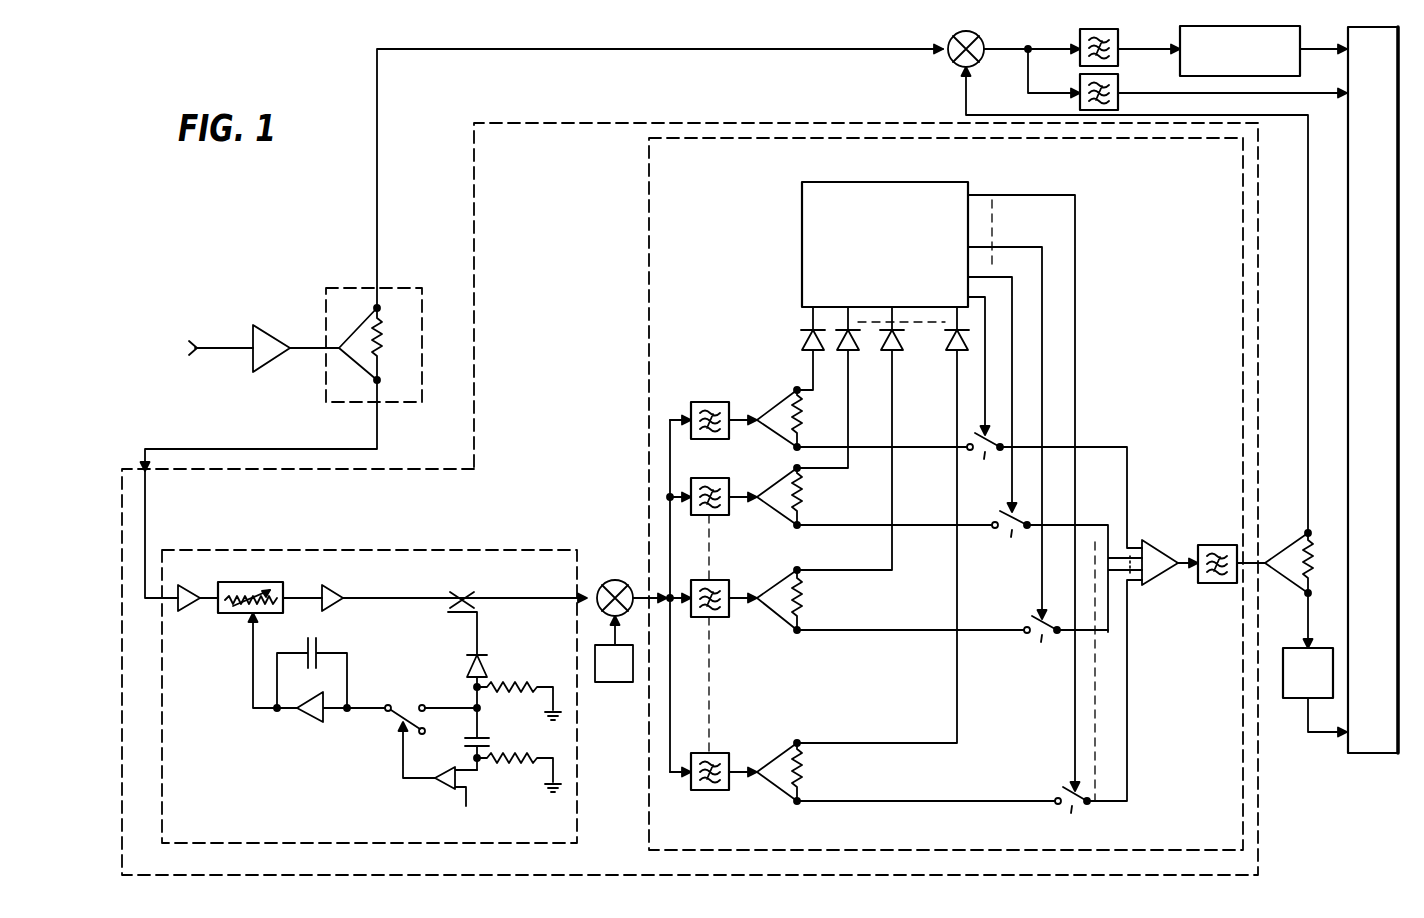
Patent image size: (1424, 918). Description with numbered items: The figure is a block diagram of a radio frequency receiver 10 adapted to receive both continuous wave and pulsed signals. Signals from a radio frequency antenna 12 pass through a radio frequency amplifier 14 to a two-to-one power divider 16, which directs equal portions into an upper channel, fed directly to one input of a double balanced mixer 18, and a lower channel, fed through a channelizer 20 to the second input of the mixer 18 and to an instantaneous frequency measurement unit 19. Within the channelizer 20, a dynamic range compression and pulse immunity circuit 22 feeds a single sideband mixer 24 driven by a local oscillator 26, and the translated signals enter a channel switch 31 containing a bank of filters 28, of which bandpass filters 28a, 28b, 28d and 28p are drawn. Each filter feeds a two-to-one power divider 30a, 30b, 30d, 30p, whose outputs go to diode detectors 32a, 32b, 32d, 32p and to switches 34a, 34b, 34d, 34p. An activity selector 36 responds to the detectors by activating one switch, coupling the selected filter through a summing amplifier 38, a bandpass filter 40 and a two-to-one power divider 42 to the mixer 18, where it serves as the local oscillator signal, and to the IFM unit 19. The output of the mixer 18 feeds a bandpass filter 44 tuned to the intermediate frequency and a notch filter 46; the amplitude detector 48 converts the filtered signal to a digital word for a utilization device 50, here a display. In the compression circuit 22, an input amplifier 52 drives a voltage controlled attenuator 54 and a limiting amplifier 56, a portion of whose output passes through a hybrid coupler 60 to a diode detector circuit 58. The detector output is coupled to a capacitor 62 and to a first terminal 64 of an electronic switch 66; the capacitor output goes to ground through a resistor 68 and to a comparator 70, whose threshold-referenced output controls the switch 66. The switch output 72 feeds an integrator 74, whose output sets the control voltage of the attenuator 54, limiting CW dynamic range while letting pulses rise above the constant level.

The radio frequency receiver 10 is at (738, 42).
The radio frequency antenna 12 is at (199, 340).
The radio frequency amplifier 14 is at (278, 336).
The two-to-one power divider 16 is at (390, 288).
The double balanced mixer 18 is at (978, 37).
The instantaneous frequency measurement unit 19 is at (1329, 648).
The channelizer 20 is at (1240, 880).
The dynamic range compression and pulse immunity circuit 22 is at (205, 846).
The single sideband mixer 24 is at (614, 578).
The local oscillator 26 is at (617, 684).
The bank of filters 28 is at (708, 354).
The bandpass filter 28a is at (705, 400).
The bandpass filter 28b is at (706, 478).
The bandpass filter 28d is at (720, 580).
The bandpass filter 28p is at (720, 753).
The 2:1 power divider 30a is at (802, 427).
The 2:1 power divider 30b is at (802, 506).
The 2:1 power divider 30d is at (804, 612).
The 2:1 power divider 30p is at (804, 784).
The channel switch 31 is at (647, 150).
The diode detector 32a is at (804, 337).
The diode detector 32b is at (853, 356).
The diode detector 32d is at (895, 356).
The diode detector 32p is at (950, 337).
The switch 34a is at (969, 490).
The switch 34b is at (969, 571).
The switch 34d is at (952, 640).
The switch 34p is at (969, 709).
The activity selector 36 is at (972, 184).
The summing amplifier 38 is at (1171, 546).
The bandpass filter 40 is at (1218, 584).
The 2:1 power divider 42 is at (1312, 545).
The bandpass filter 44 is at (1118, 44).
The notch filter 46 is at (1118, 88).
The amplitude detector 48 is at (1300, 44).
The utilization device 50 is at (1400, 80).
The input amplifier 52 is at (187, 591).
The voltage controlled attenuator 54 is at (250, 583).
The limiting amplifier 56 is at (338, 590).
The diode detector circuit 58 is at (492, 667).
The hybrid coupler 60 is at (480, 602).
The capacitor 62 is at (491, 741).
The first terminal 64 is at (425, 704).
The electronic switch 66 is at (405, 718).
The resistor 68 is at (540, 765).
The comparator 70 is at (450, 768).
The output 72 is at (388, 704).
The integrator 74 is at (349, 656).